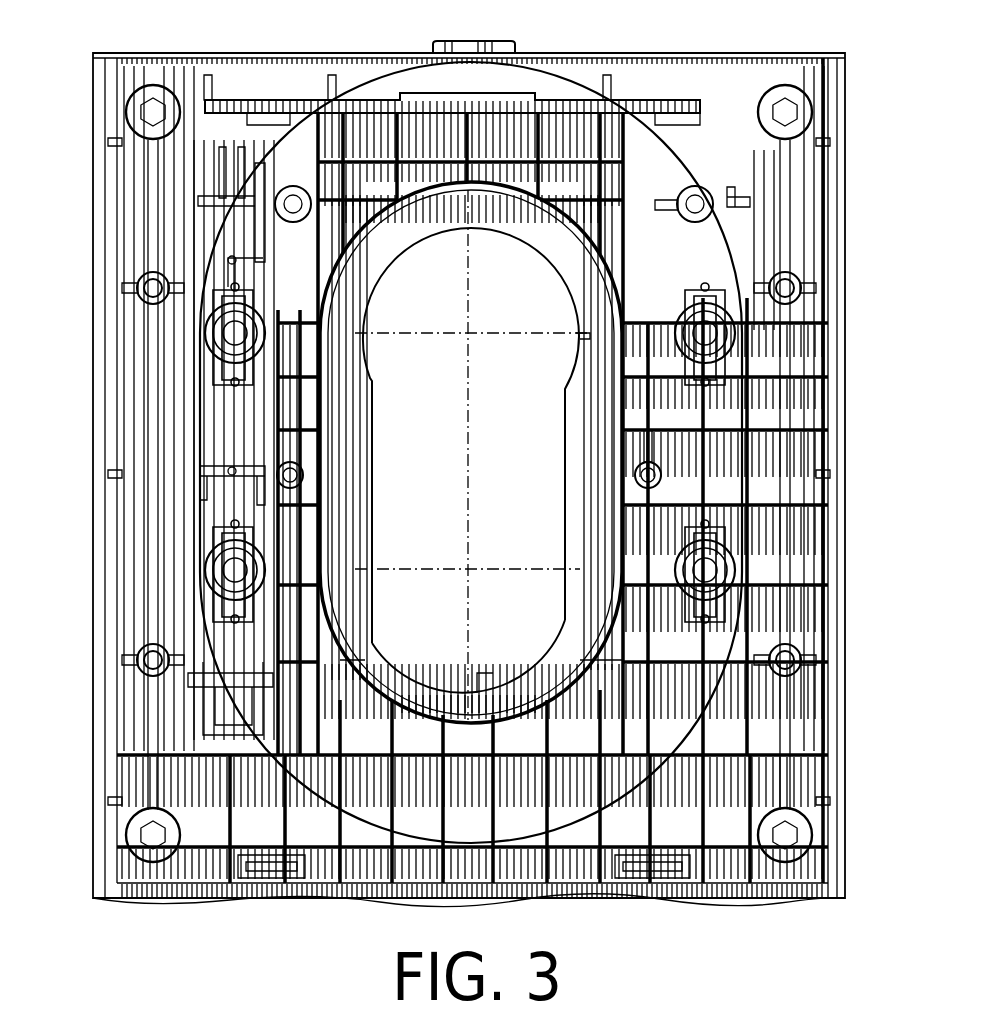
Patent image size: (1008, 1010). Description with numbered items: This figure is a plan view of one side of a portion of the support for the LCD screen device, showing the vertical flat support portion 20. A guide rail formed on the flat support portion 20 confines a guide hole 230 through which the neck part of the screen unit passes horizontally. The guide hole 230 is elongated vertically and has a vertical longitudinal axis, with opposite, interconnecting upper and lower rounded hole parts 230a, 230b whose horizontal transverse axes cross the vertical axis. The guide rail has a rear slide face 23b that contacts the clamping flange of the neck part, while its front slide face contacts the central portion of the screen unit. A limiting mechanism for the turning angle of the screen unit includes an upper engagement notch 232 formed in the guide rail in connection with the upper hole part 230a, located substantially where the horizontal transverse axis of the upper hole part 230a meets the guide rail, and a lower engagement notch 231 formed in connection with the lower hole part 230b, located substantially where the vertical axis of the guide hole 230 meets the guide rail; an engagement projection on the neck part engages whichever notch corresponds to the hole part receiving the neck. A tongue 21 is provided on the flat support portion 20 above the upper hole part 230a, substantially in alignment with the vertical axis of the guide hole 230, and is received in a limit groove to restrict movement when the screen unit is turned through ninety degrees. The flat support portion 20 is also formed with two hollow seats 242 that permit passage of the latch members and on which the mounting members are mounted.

The flat support portion 20 is at (870, 266).
The tongue 21 is at (513, 44).
The rear slide face 23b is at (582, 620).
The guide hole 230 is at (626, 455).
The upper hole part 230a is at (365, 322).
The lower hole part 230b is at (372, 612).
The lower engagement notch 231 is at (500, 738).
The upper engagement notch 232 is at (608, 302).
The hollow seats 242 is at (208, 348).